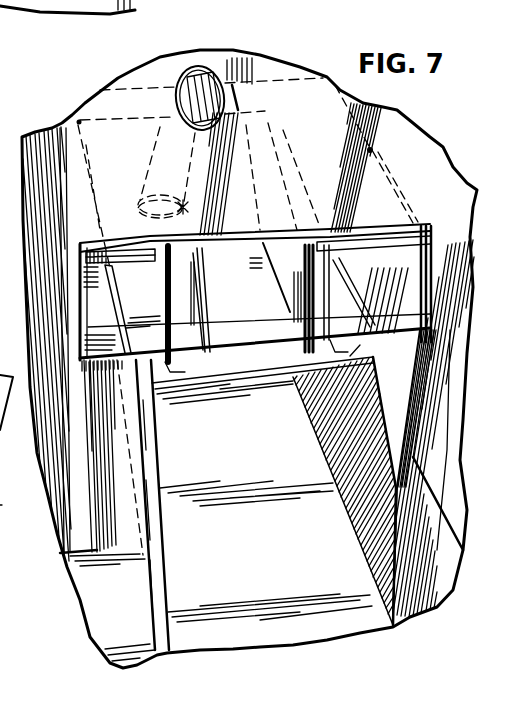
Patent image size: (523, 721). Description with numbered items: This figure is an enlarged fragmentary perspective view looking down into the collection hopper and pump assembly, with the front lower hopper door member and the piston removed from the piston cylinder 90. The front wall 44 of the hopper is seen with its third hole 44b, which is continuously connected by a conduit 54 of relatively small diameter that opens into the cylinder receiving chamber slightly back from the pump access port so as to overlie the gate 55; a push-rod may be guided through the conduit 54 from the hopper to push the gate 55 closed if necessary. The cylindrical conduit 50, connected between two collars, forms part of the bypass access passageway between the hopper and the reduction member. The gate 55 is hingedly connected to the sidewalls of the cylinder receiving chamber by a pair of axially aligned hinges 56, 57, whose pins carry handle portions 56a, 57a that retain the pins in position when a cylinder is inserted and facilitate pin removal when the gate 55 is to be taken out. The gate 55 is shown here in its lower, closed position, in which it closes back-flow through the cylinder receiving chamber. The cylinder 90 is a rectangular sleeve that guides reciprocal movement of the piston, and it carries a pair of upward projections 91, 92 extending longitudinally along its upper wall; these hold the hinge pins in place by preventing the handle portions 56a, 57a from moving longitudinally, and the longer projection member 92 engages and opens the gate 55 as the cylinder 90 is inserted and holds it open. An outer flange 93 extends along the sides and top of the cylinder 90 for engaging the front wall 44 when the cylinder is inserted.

The front wall 44 is at (305, 100).
The third hole 44b is at (198, 84).
The cylindrical conduit 50 is at (14, 514).
The conduit 54 is at (157, 170).
The gate 55 is at (372, 150).
The hinge 56 is at (150, 243).
The handle portion 56a is at (162, 302).
The hinge 57 is at (393, 224).
The handle portion 57a is at (328, 290).
The piston cylinder 90 is at (261, 547).
The upward projection 91 is at (208, 278).
The projection member 92 is at (284, 292).
The flange 93 is at (97, 413).